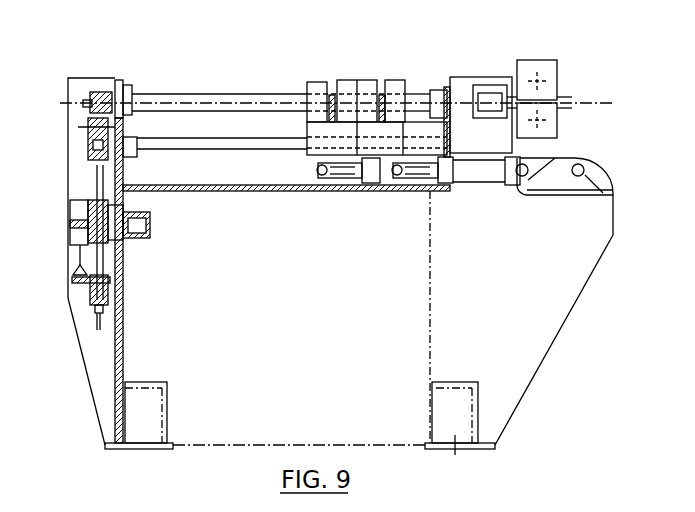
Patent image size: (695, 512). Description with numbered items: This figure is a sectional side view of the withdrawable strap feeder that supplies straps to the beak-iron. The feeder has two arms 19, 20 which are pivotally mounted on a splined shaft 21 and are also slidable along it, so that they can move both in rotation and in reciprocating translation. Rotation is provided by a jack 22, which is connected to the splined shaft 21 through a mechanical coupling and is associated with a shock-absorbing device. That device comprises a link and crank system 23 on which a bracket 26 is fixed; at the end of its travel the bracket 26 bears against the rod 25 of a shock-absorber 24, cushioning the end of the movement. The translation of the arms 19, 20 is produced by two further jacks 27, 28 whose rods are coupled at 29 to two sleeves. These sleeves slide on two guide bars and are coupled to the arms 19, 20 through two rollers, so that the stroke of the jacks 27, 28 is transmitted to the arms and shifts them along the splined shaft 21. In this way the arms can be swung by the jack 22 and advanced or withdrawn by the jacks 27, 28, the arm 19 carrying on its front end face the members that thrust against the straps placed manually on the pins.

The arm 19 is at (317, 85).
The arm 20 is at (397, 85).
The splined shaft 21 is at (202, 105).
The jack 22 is at (543, 85).
The link and crank system 23 is at (100, 190).
The shock-absorber 24 is at (82, 237).
The rod 25 is at (80, 260).
The bracket 26 is at (72, 283).
The jack 27 is at (370, 173).
The jack 28 is at (447, 183).
The coupling 29 is at (318, 167).